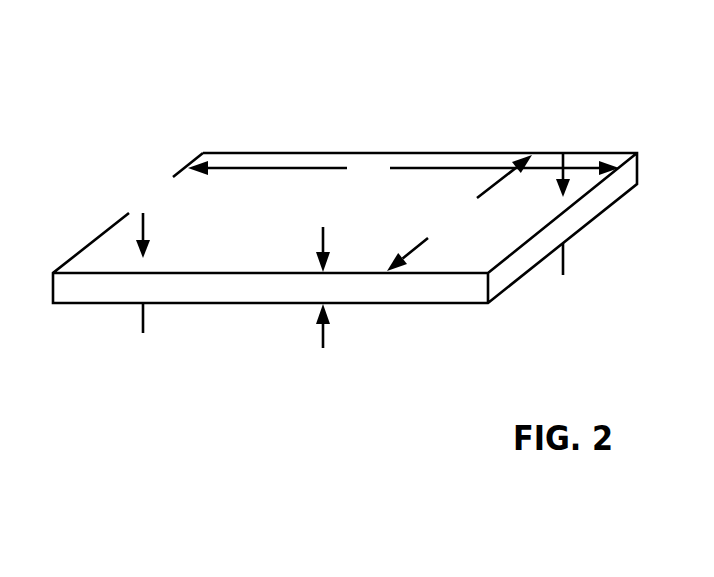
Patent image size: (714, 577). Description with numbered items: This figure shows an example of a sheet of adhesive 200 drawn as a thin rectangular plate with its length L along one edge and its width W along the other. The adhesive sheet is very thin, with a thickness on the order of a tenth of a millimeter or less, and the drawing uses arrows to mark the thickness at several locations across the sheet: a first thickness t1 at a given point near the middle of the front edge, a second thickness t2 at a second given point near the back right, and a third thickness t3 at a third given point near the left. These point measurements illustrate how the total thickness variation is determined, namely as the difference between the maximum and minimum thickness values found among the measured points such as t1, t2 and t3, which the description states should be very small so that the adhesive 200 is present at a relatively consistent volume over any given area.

The adhesive 200 is at (154, 70).
The length of the plate L is at (403, 175).
The width of the plate W is at (459, 213).
The first thickness t1 is at (322, 265).
The second thickness t2 is at (562, 191).
The third thickness t3 is at (142, 250).